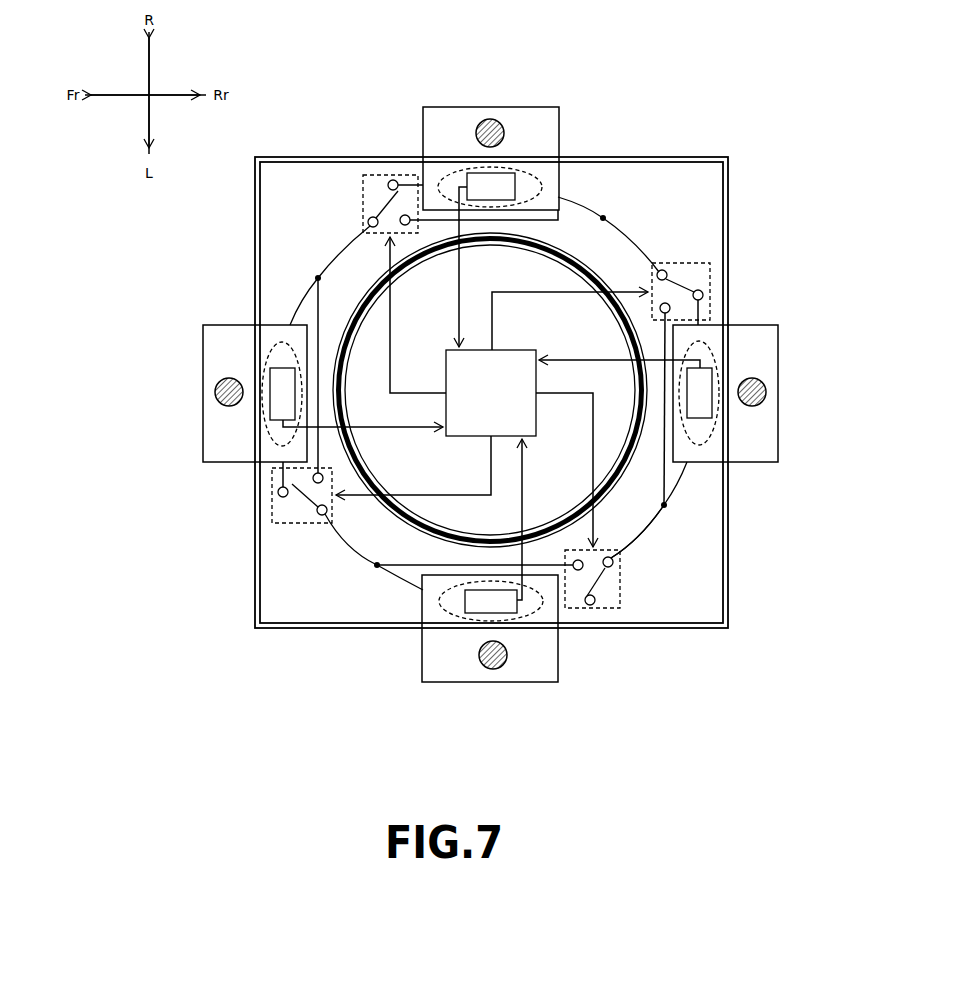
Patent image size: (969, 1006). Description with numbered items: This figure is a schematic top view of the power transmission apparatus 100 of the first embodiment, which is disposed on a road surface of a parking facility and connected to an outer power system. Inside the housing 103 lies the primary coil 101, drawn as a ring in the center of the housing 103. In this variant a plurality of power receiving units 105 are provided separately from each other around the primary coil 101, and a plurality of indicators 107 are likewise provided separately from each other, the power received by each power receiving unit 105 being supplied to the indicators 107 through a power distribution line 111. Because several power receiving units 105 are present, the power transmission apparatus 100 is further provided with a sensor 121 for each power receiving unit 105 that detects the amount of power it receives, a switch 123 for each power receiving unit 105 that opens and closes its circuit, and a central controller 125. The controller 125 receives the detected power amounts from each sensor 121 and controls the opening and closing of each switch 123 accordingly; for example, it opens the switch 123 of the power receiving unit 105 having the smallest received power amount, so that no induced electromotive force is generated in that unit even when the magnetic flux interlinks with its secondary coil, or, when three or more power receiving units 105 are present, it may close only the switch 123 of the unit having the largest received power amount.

The power transmission apparatus 100 is at (684, 140).
The primary coil 101 is at (590, 268).
The housing 103 is at (728, 200).
The power receiving unit 105 is at (558, 183).
The indicator 107 is at (489, 107).
The power distribution line 111 is at (642, 533).
The sensor 121 is at (535, 172).
The switch 123 is at (383, 175).
The controller 125 is at (536, 412).